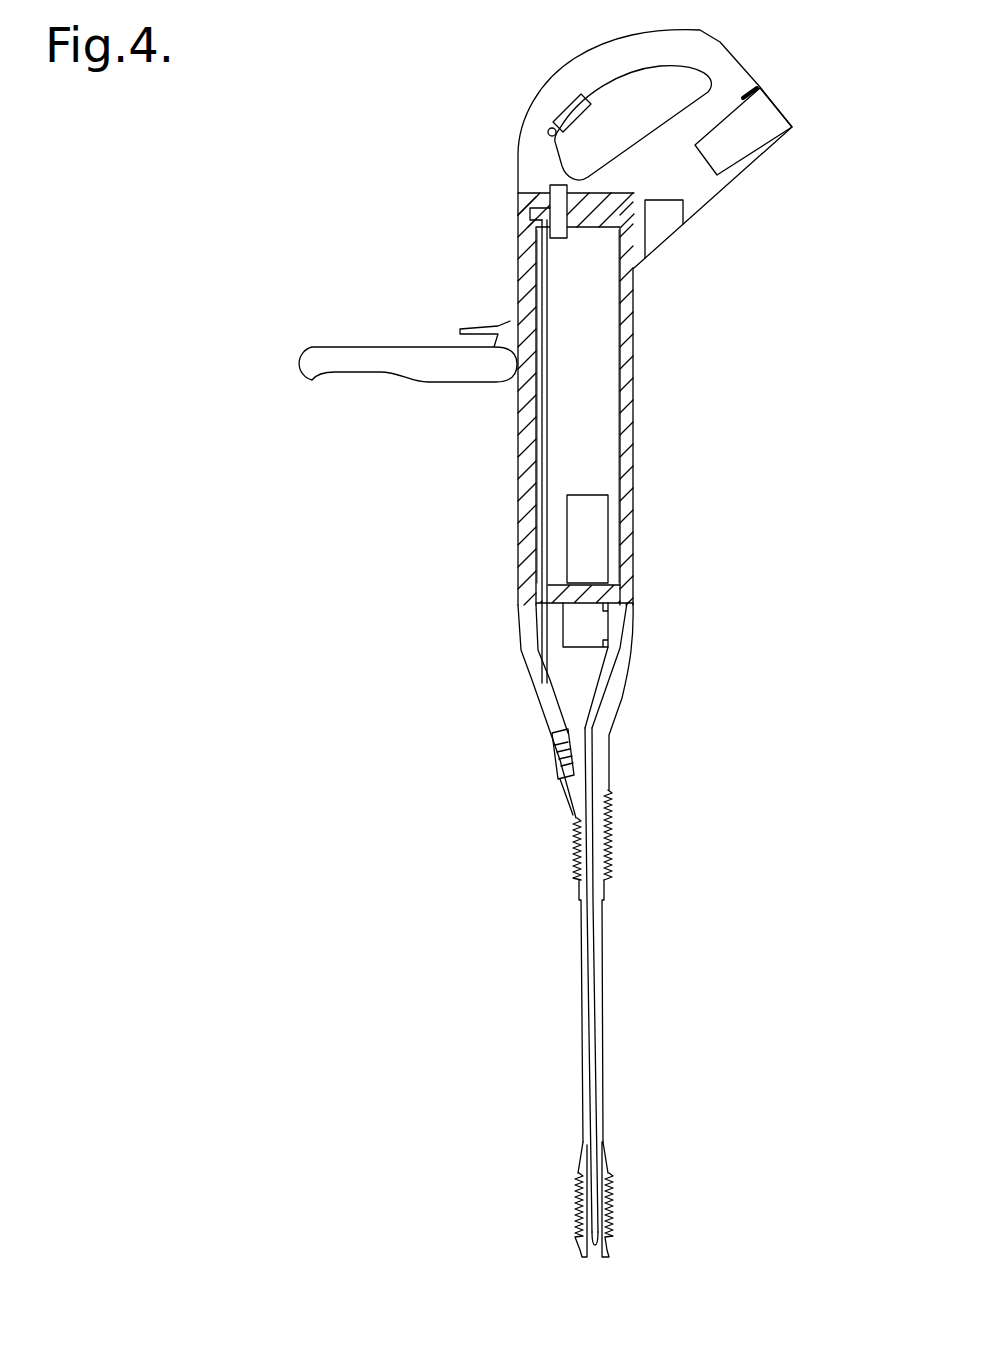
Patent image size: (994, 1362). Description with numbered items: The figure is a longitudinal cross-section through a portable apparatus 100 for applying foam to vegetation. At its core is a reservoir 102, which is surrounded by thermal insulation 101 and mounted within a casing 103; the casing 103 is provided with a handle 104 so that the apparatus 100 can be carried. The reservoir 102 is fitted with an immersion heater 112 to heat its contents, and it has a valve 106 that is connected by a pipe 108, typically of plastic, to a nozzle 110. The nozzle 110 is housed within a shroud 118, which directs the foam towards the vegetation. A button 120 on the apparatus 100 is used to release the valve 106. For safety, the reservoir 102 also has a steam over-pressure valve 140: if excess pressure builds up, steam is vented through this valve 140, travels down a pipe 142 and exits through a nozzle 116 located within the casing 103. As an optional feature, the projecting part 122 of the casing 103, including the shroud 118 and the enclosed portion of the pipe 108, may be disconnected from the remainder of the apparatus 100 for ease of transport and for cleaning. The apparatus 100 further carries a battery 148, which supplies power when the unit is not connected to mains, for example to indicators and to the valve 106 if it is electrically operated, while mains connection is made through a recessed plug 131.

The portable apparatus 100 is at (488, 204).
The thermal insulation 101 is at (520, 448).
The reservoir 102 is at (607, 425).
The casing 103 is at (628, 330).
The handle 104 is at (408, 352).
The valve 106 is at (612, 629).
The pipe 108 is at (594, 840).
The nozzle 110 is at (596, 1236).
The immersion heater 112 is at (607, 554).
The nozzle 116 is at (560, 760).
The shroud 118 is at (577, 1236).
The button 120 is at (578, 100).
The projecting part 122 is at (602, 1030).
The recessed plug 131 is at (676, 212).
The steam over-pressure valve 140 is at (553, 210).
The pipe 142 is at (540, 655).
The battery 148 is at (738, 146).